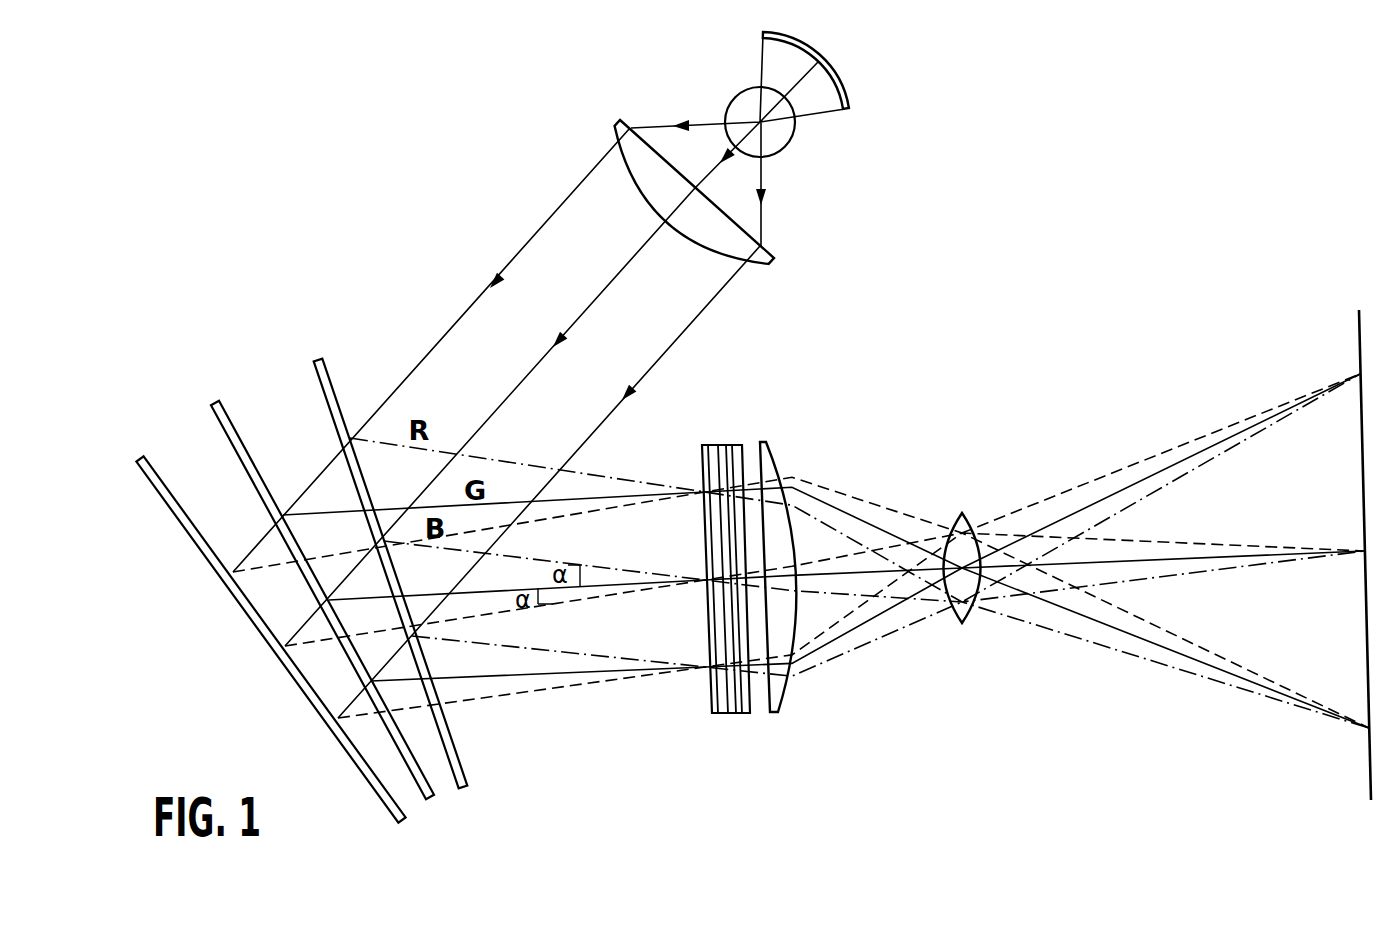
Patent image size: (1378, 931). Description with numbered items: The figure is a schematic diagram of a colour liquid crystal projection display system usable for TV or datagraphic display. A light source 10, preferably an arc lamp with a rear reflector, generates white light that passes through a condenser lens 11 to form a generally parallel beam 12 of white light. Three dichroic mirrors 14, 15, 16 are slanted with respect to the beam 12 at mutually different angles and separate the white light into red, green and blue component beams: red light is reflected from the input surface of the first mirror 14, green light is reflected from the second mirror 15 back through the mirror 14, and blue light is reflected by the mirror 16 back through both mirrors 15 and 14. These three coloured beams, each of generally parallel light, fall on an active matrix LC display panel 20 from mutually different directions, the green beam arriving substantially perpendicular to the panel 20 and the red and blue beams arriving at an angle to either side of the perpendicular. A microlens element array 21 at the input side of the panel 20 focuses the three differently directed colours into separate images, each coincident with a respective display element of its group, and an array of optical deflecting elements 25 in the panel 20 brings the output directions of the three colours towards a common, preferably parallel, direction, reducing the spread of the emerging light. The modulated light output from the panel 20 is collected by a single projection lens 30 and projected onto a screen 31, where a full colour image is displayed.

The light source 10 is at (830, 184).
The condenser lens 11 is at (764, 259).
The beam 12 is at (518, 253).
The first dichroic mirror 14 is at (318, 357).
The second dichroic mirror 15 is at (217, 402).
The dichroic mirror 16 is at (140, 457).
The active matrix LC display panel 20 is at (705, 608).
The microlens element array 21 is at (710, 707).
The array of optical deflecting elements 25 is at (713, 445).
The projection lens 30 is at (760, 733).
The screen 31 is at (1366, 765).